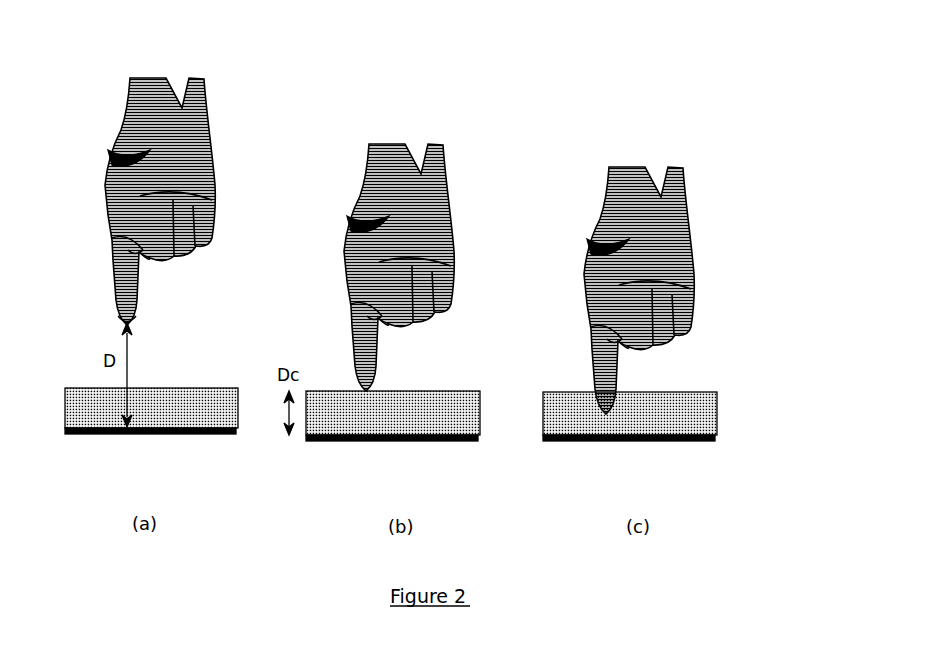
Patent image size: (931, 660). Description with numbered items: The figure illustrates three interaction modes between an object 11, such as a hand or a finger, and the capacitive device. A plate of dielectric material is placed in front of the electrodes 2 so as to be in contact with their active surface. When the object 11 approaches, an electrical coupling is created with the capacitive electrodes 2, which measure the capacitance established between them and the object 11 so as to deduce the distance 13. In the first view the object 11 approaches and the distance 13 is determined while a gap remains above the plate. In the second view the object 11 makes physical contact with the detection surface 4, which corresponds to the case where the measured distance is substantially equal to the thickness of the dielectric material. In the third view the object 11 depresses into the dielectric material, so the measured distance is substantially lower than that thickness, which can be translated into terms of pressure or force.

The object 11 is at (203, 80).
The distance 13 is at (124, 352).
The electrodes 2 is at (155, 436).
The detection surface 4 is at (462, 391).